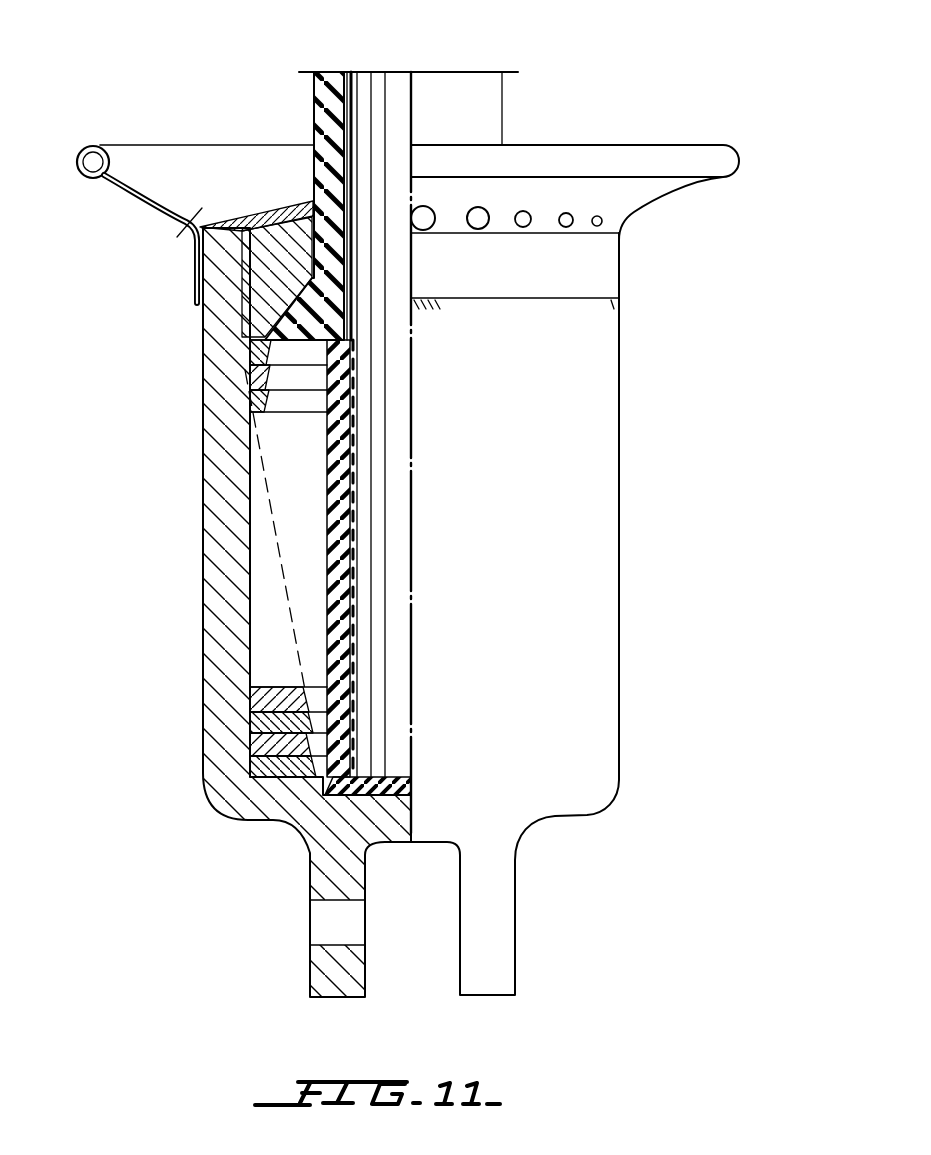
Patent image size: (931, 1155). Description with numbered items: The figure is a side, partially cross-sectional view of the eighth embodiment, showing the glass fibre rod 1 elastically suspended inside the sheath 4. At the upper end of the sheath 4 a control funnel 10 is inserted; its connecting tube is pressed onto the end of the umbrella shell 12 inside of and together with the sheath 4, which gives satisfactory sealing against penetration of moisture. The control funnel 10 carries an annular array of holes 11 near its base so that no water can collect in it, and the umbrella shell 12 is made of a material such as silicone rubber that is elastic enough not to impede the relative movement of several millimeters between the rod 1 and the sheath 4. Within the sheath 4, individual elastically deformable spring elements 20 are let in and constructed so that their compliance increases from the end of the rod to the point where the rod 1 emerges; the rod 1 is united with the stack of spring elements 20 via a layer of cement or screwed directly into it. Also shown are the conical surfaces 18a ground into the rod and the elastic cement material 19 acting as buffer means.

The glass fibre rod 1 is at (372, 103).
The sheath 4 is at (322, 850).
The control funnel 10 is at (188, 170).
The holes 11 is at (482, 216).
The umbrella shell 12 is at (317, 115).
The conical surfaces 18a is at (325, 467).
The elastic cement material 19 is at (323, 567).
The spring elements 20 is at (262, 362).